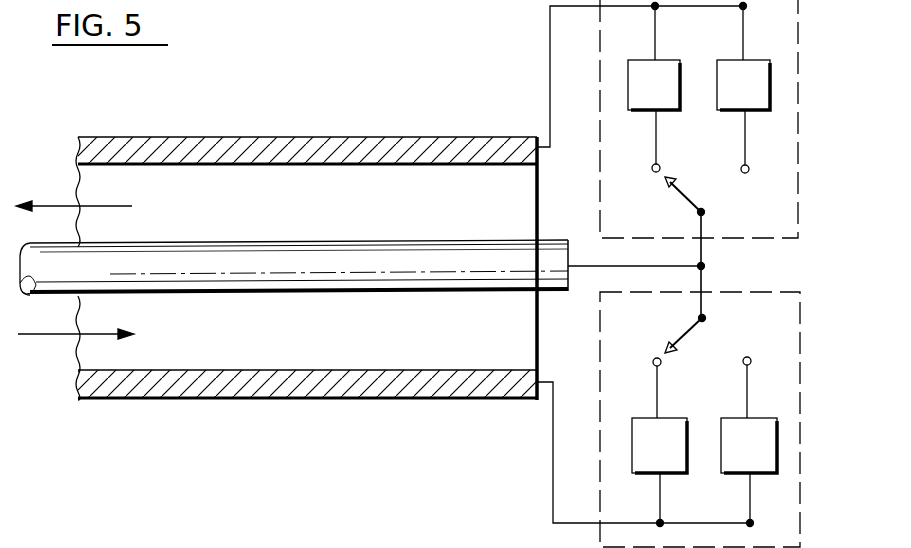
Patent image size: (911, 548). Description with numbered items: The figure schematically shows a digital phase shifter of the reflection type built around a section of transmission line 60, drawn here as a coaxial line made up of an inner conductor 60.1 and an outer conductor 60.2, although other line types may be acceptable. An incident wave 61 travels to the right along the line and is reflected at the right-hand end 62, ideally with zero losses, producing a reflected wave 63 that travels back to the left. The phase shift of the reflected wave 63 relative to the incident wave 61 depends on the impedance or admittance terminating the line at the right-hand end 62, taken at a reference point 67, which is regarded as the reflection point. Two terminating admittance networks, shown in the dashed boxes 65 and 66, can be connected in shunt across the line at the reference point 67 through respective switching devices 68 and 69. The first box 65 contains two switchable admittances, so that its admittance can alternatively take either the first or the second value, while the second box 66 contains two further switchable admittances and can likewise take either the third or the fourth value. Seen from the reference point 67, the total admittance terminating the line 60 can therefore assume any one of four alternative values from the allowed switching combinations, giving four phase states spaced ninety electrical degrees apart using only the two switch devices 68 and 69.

The section of transmission line 60 is at (294, 245).
The inner conductor 60.1 is at (258, 243).
The outer conductor 60.2 is at (282, 138).
The incident wave 61 is at (47, 338).
The right-hand end 62 is at (540, 400).
The reflected wave 63 is at (58, 202).
The first dashed box of switchable admittances 65 is at (799, 86).
The second dashed box of switchable admittances 66 is at (803, 368).
The reference point 67 is at (705, 266).
The switching device 68 is at (695, 187).
The switching device 69 is at (700, 343).